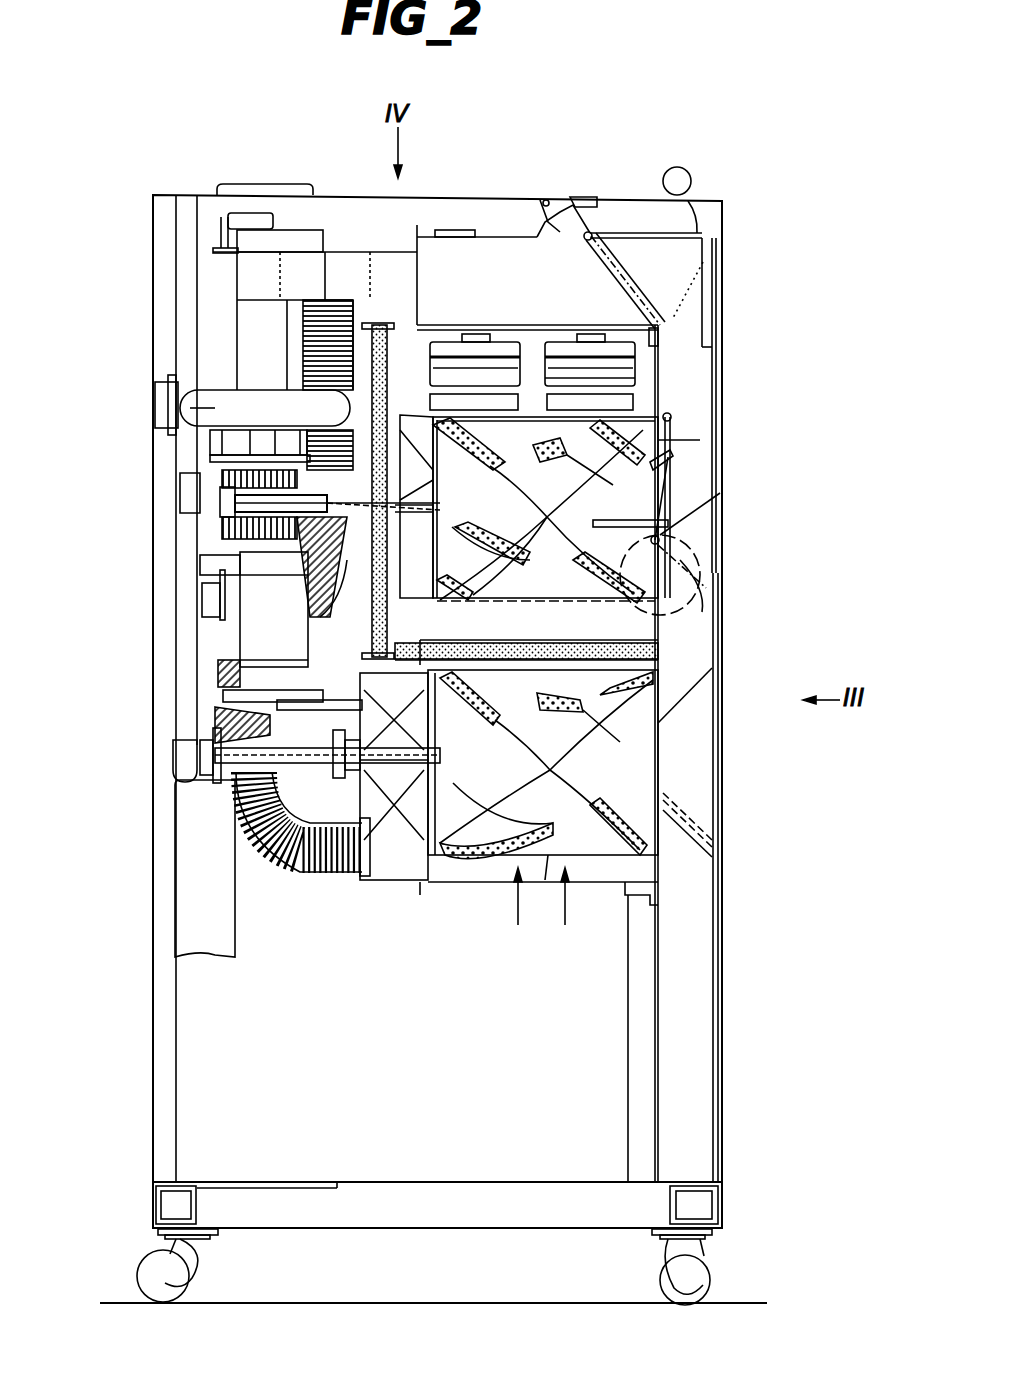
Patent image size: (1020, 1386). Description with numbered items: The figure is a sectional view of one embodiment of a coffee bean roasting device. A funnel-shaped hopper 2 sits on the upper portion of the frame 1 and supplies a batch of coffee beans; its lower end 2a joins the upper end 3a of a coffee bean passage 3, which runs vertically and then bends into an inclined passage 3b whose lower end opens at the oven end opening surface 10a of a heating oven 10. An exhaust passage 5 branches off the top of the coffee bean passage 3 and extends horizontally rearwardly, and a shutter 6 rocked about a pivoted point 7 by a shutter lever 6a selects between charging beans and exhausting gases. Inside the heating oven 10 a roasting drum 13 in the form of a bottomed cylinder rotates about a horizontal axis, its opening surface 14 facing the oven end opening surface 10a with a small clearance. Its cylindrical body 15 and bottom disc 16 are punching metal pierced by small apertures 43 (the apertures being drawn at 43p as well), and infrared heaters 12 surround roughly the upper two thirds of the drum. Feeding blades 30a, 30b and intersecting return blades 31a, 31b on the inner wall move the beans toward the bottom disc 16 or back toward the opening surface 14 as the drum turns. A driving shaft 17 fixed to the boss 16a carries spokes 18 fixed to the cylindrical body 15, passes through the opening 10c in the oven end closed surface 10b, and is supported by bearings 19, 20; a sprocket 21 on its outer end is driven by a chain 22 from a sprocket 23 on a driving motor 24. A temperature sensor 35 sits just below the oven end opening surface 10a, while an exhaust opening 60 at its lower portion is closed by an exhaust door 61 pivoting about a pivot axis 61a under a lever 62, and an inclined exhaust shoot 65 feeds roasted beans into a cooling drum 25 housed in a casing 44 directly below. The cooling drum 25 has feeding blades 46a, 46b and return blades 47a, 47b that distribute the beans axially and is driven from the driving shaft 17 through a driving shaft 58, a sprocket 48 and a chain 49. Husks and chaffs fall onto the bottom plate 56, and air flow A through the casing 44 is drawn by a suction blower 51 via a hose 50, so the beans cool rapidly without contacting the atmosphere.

The frame 1 is at (360, 218).
The hopper 2 is at (615, 215).
The lower end of hopper 2a is at (673, 333).
The coffee bean passage 3 is at (715, 408).
The upper end of coffee bean passage 3a is at (710, 333).
The inclined passage 3b is at (720, 508).
The exhaust passage 5 is at (442, 228).
The shutter 6 is at (662, 250).
The shutter lever 6a is at (540, 200).
The pivoted point 7 is at (585, 197).
The heating oven 10 is at (437, 330).
The oven end opening surface 10a is at (672, 474).
The oven end closed surface 10b is at (290, 430).
The opening 10c is at (270, 449).
The infrared heater 12 is at (440, 372).
The roasting drum 13 is at (705, 378).
The opening surface 14 is at (672, 447).
The cylindrical body 15 is at (423, 386).
The bottom disc 16 is at (372, 445).
The boss 16a is at (440, 470).
The driving shaft 17 is at (300, 576).
The spokes 18 is at (330, 602).
The bearing 19 is at (255, 476).
The bearing 20 is at (222, 505).
The sprocket 21 is at (190, 512).
The chain 22 is at (215, 566).
The sprocket 23 is at (210, 584).
The driving motor 24 is at (250, 637).
The cooling drum 25 is at (690, 683).
The feeding blade 30a is at (500, 460).
The feeding blade 30b is at (478, 600).
The return blade 31a is at (525, 450).
The return blade 31b is at (555, 600).
The temperature sensor 35 is at (690, 503).
The small apertures 43 is at (582, 390).
The belt 43p is at (325, 572).
The casing 44 is at (380, 882).
The feeding blade 46a is at (495, 722).
The feeding blade 46b is at (465, 847).
The return blade 47a is at (680, 737).
The return blade 47b is at (545, 882).
The sprocket 48 is at (218, 786).
The chain 49 is at (270, 657).
The hose 50 is at (275, 872).
The suction blower 51 is at (158, 404).
The bottom plate 56 is at (488, 886).
The driving shaft 58 is at (330, 719).
The exhaust opening 60 is at (700, 632).
The exhaust door 61 is at (692, 597).
The pivot axis 61a is at (702, 562).
The lever 62 is at (715, 542).
The exhaust shoot 65 is at (700, 712).
The air flow A is at (568, 892).